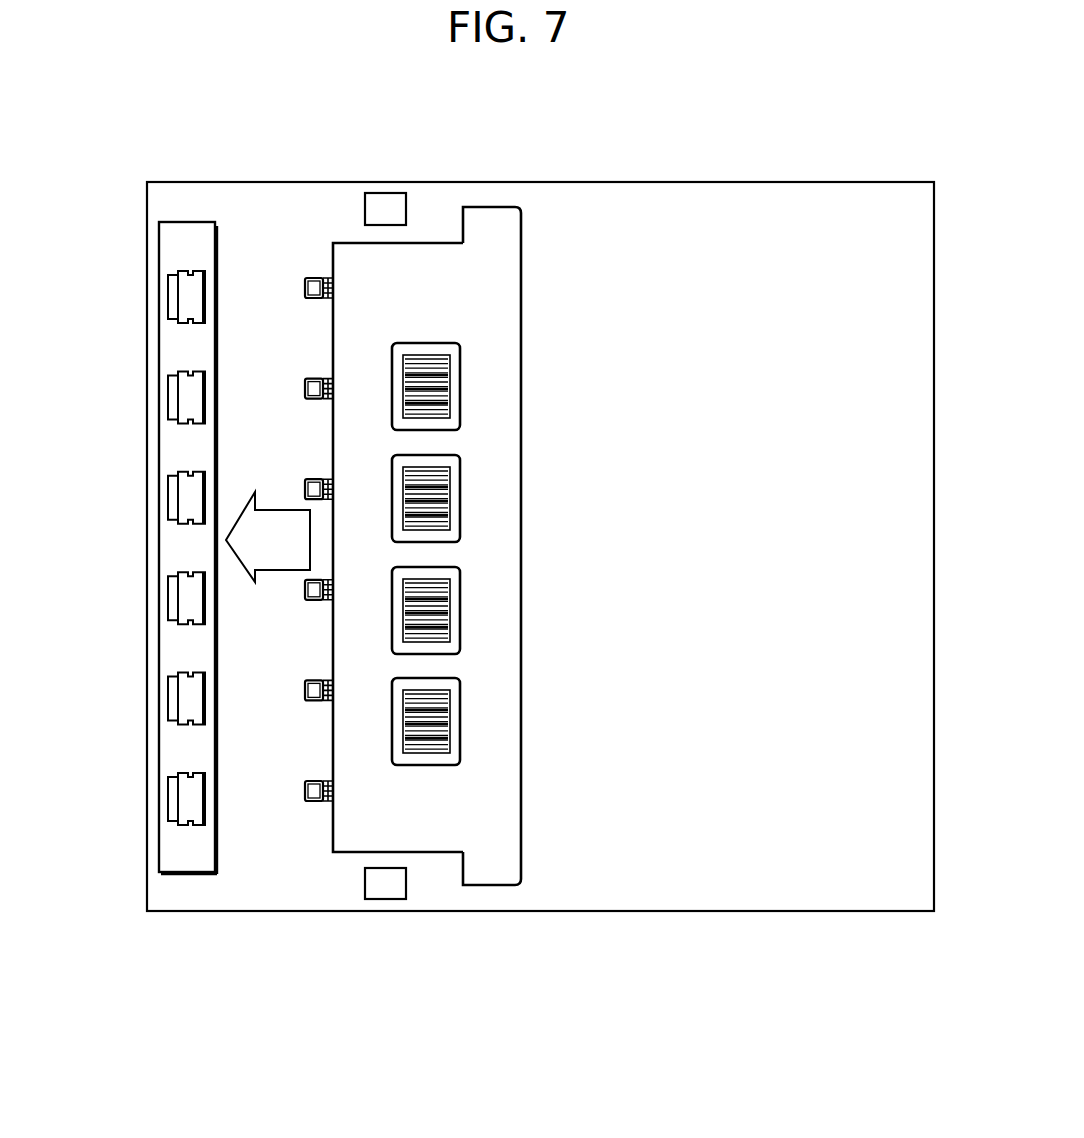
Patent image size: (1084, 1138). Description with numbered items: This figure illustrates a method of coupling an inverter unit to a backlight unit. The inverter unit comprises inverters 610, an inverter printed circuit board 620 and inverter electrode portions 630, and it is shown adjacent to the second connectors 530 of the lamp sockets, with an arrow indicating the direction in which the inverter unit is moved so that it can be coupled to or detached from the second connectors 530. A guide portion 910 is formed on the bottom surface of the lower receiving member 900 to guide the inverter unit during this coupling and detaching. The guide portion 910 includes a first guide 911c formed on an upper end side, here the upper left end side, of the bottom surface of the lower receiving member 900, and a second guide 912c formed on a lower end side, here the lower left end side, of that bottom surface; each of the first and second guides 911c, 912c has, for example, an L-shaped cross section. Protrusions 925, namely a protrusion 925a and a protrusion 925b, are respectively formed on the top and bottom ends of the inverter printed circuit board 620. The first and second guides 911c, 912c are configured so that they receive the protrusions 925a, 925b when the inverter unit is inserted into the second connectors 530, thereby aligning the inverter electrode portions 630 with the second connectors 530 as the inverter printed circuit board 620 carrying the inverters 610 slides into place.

The lower receiving member 900 is at (846, 207).
The second connectors 530 is at (168, 393).
The inverter electrode portions 630 is at (322, 277).
The inverter printed circuit board 620 is at (433, 257).
The protrusions 925 is at (706, 572).
The protrusion 925a is at (500, 217).
The protrusion 925b is at (500, 875).
The guide portion 910 is at (649, 572).
The first guide 911c is at (386, 208).
The second guide 912c is at (384, 885).
The inverters 610 is at (450, 370).